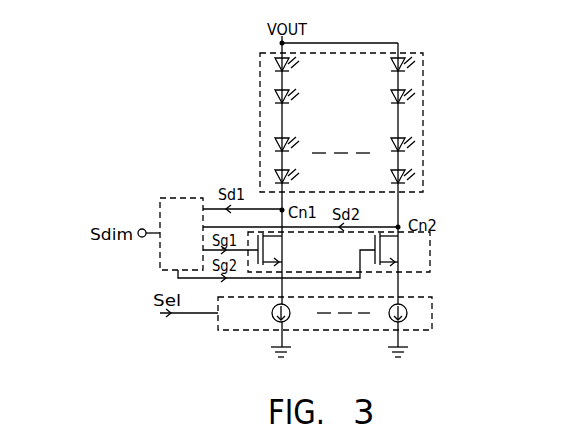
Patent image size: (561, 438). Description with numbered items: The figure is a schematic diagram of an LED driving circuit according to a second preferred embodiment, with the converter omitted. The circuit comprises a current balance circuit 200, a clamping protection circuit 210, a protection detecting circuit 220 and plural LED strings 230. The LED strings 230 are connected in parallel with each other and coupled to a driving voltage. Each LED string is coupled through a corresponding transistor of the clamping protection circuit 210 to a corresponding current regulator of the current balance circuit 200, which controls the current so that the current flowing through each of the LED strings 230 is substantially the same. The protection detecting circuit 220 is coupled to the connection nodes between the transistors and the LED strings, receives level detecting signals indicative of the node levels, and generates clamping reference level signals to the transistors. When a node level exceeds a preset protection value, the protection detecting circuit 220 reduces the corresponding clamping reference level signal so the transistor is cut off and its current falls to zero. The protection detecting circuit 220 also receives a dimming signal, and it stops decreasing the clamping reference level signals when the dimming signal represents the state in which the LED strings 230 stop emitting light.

The current balance circuit 200 is at (325, 313).
The clamping protection circuit 210 is at (430, 236).
The protection detecting circuit 220 is at (181, 234).
The LED strings 230 is at (423, 120).